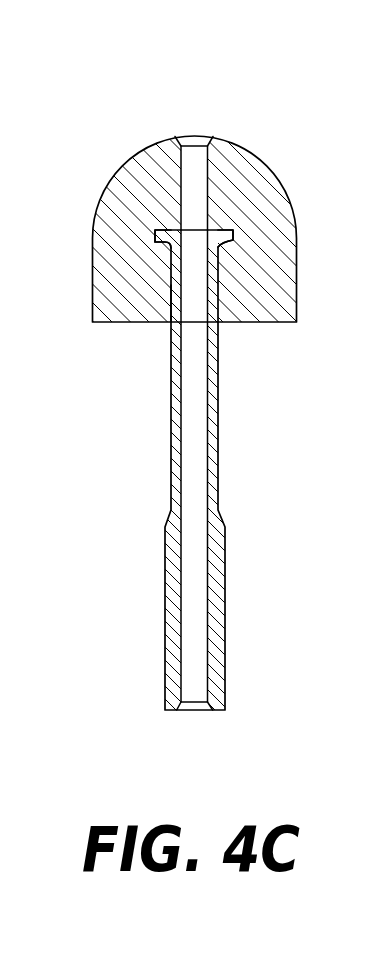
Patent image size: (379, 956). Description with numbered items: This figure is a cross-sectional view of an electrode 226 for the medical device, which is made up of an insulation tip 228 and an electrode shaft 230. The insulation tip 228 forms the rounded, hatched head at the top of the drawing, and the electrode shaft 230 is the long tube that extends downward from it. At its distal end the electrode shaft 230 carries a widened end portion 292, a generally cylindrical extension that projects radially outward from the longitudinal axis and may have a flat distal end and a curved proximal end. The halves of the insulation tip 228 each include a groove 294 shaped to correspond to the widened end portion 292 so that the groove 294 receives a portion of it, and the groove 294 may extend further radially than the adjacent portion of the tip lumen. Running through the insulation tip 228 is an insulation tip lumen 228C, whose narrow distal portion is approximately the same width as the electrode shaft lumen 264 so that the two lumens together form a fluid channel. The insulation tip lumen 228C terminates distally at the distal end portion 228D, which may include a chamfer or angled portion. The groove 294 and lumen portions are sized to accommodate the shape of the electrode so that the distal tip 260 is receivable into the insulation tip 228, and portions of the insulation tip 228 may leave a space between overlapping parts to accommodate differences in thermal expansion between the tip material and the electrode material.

The electrode 226 is at (189, 393).
The insulation tip 228 is at (291, 173).
The insulation tip lumen 228C is at (192, 170).
The distal end portion 228D is at (188, 136).
The electrode shaft 230 is at (222, 473).
The distal tip 260 is at (172, 293).
The electrode shaft lumen 264 is at (200, 398).
The widened end portion 292 is at (219, 246).
The groove 294 is at (163, 228).